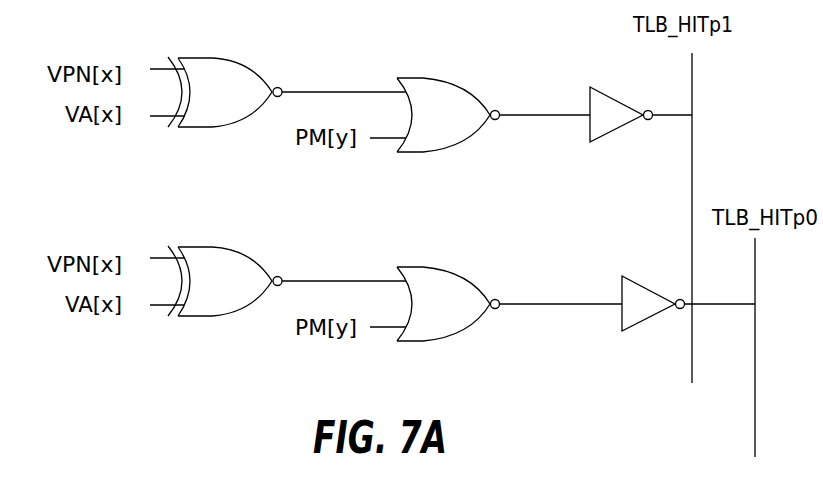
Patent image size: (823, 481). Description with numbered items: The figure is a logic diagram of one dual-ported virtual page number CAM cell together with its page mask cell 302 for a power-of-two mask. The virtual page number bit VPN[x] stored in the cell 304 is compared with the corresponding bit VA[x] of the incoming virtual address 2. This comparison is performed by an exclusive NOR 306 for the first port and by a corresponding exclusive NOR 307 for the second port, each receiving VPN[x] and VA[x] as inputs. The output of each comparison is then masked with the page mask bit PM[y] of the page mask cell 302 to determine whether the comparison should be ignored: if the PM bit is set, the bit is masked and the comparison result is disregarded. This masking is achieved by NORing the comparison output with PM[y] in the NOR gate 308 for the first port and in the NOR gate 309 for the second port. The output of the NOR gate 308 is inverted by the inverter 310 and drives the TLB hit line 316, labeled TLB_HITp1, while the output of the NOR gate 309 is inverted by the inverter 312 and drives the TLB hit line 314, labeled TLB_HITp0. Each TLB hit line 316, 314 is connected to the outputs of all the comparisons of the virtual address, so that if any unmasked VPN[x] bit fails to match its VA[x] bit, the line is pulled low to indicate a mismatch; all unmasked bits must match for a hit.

The cell 304 is at (110, 62).
The incoming virtual address 2 is at (107, 134).
The page mask cell 302 is at (322, 148).
The exclusive NOR 306 is at (252, 83).
The exclusive NOR 307 is at (252, 272).
The NOR gate 308 is at (457, 90).
The NOR gate 309 is at (457, 279).
The inverter 310 is at (618, 98).
The inverter 312 is at (636, 287).
The TLB hit line 316 is at (692, 155).
The TLB hit line 314 is at (755, 330).